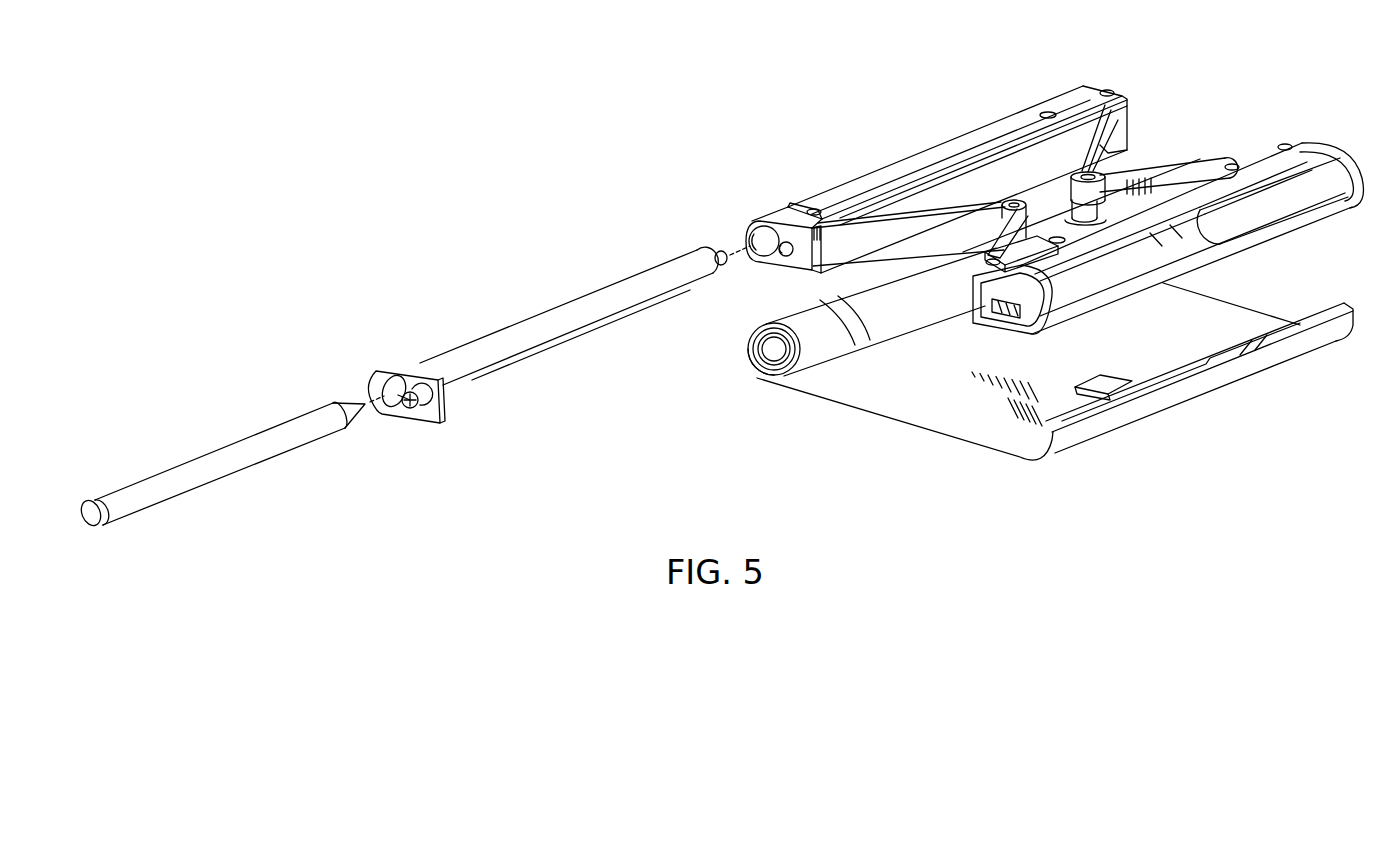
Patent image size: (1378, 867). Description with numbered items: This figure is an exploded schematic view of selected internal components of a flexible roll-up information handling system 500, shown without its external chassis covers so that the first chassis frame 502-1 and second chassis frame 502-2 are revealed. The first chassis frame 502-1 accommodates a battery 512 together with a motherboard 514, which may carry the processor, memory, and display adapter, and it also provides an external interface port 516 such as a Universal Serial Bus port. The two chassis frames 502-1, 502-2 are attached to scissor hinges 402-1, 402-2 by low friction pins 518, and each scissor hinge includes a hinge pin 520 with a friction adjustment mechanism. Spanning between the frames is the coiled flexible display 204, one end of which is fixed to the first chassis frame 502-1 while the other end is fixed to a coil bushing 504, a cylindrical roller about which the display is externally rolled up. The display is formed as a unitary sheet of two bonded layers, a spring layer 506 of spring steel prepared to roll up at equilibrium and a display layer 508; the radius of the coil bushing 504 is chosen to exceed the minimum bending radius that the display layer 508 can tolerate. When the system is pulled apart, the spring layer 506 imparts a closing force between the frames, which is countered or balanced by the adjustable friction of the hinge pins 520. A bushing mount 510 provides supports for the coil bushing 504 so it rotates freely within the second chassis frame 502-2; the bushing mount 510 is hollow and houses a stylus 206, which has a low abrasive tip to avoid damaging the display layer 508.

The flexible roll-up information handling system 500 is at (609, 150).
The stylus 206 is at (207, 453).
The bushing mount 510 is at (553, 305).
The coiled flexible display 204 is at (782, 312).
The coil bushing 504 is at (758, 382).
The spring layer 506 is at (911, 414).
The display layer 508 is at (949, 446).
The external interface port 516 is at (1001, 320).
The motherboard 514 is at (1120, 272).
The battery 512 is at (1273, 213).
The first chassis frame 502-1 is at (1270, 153).
The second chassis frame 502-2 is at (900, 167).
The first scissor hinge 402-1 is at (1180, 143).
The second scissor hinge 402-2 is at (940, 240).
The low friction pin 518 is at (814, 209).
The hinge pin 520 is at (1013, 200).